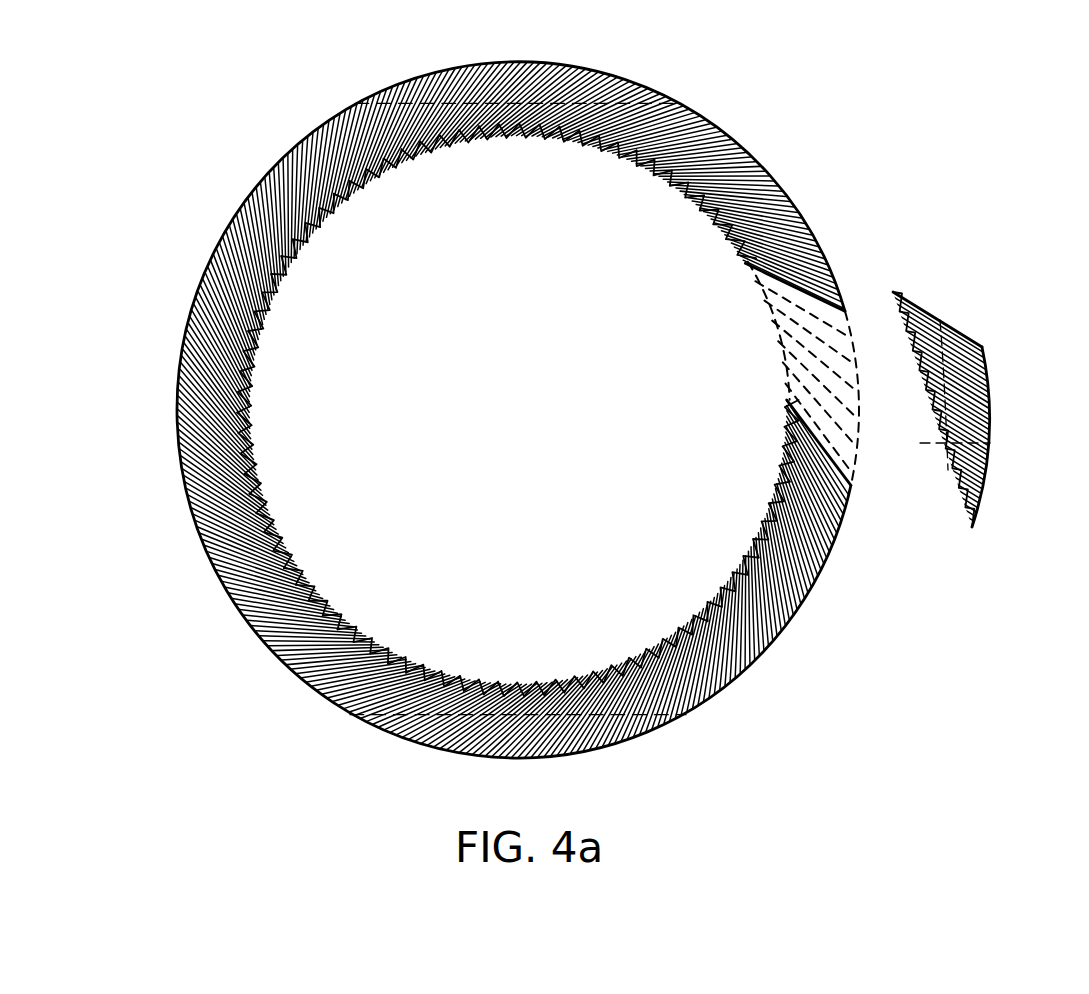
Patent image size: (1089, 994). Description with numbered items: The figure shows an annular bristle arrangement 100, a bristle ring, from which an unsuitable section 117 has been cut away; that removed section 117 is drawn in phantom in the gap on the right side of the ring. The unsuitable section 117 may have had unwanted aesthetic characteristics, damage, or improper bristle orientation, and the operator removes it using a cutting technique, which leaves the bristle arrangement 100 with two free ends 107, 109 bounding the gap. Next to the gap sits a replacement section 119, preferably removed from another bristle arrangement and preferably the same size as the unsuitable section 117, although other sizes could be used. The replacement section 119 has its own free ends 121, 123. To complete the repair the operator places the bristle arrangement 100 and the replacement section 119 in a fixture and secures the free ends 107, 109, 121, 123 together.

The bristle arrangement 100 is at (838, 186).
The free end 107 is at (851, 306).
The free end 109 is at (858, 508).
The unsuitable section 117 is at (776, 348).
The replacement section 119 is at (938, 492).
The free end 121 is at (988, 338).
The free end 123 is at (964, 530).